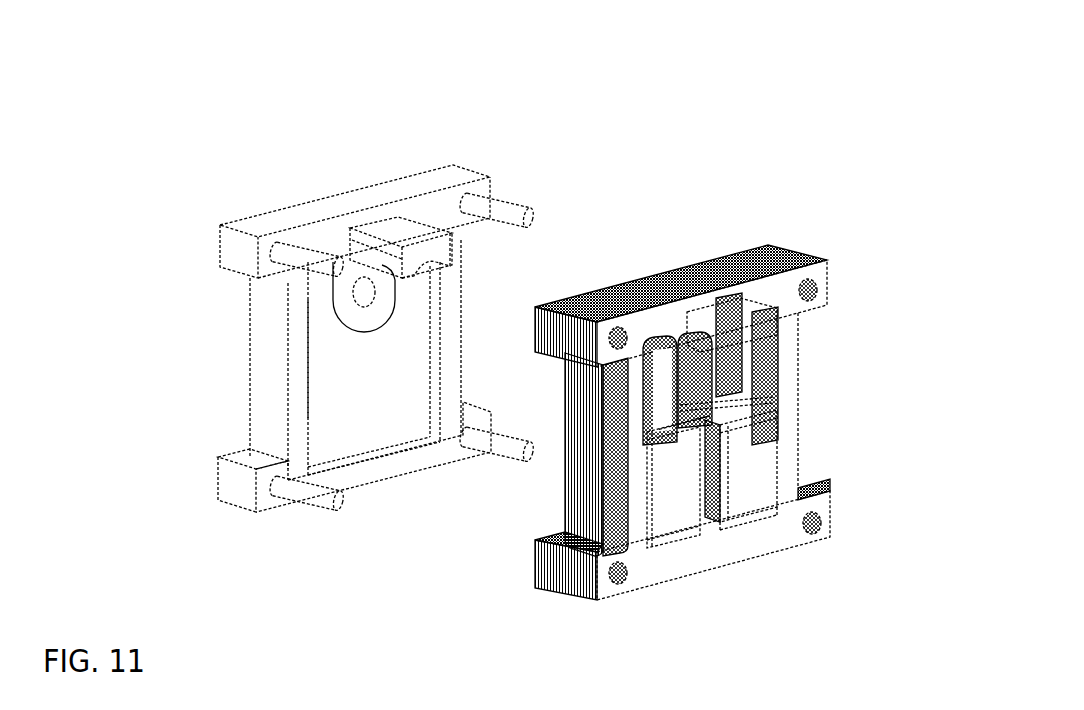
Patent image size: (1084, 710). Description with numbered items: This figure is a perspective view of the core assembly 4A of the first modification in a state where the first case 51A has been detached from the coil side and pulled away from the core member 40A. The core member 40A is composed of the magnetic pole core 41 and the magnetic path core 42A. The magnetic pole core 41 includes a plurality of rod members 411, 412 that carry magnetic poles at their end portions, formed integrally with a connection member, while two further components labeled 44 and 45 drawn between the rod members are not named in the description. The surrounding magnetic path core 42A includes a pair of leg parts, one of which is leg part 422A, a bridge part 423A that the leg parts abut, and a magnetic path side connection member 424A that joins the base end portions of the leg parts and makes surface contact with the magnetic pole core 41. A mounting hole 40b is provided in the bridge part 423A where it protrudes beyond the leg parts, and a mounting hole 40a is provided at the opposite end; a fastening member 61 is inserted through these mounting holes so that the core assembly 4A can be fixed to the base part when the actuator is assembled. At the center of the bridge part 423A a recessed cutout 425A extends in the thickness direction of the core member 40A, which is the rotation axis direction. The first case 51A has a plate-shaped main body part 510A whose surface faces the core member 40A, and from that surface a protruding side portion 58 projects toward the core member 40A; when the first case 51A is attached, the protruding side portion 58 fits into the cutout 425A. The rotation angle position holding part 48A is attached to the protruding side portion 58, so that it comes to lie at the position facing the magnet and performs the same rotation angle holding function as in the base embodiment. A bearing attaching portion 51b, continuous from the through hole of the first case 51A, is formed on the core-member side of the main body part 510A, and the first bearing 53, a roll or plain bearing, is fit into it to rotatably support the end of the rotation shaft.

The core assembly 4A is at (517, 70).
The first case 51A is at (213, 226).
The fastening member 61 is at (311, 262).
The protruding side portion 58 is at (391, 240).
The rotation angle position holding part 48A is at (408, 268).
The first bearing 53 is at (343, 295).
The bearing attaching portion 51b is at (367, 325).
The main body part 510A is at (392, 437).
The core member 40A is at (749, 245).
The mounting hole 40b is at (803, 273).
The mounting hole 40a is at (813, 522).
The magnetic path core 42A is at (830, 288).
The bridge part 423A is at (655, 286).
The cutout 425A is at (698, 312).
The rod member 411 is at (663, 402).
The rod member 412 is at (735, 394).
The first element 44 is at (740, 495).
The second element 45 is at (677, 490).
The leg part 422A is at (638, 480).
The magnetic pole core 41 is at (536, 556).
The magnetic path side connection member 424A is at (583, 572).